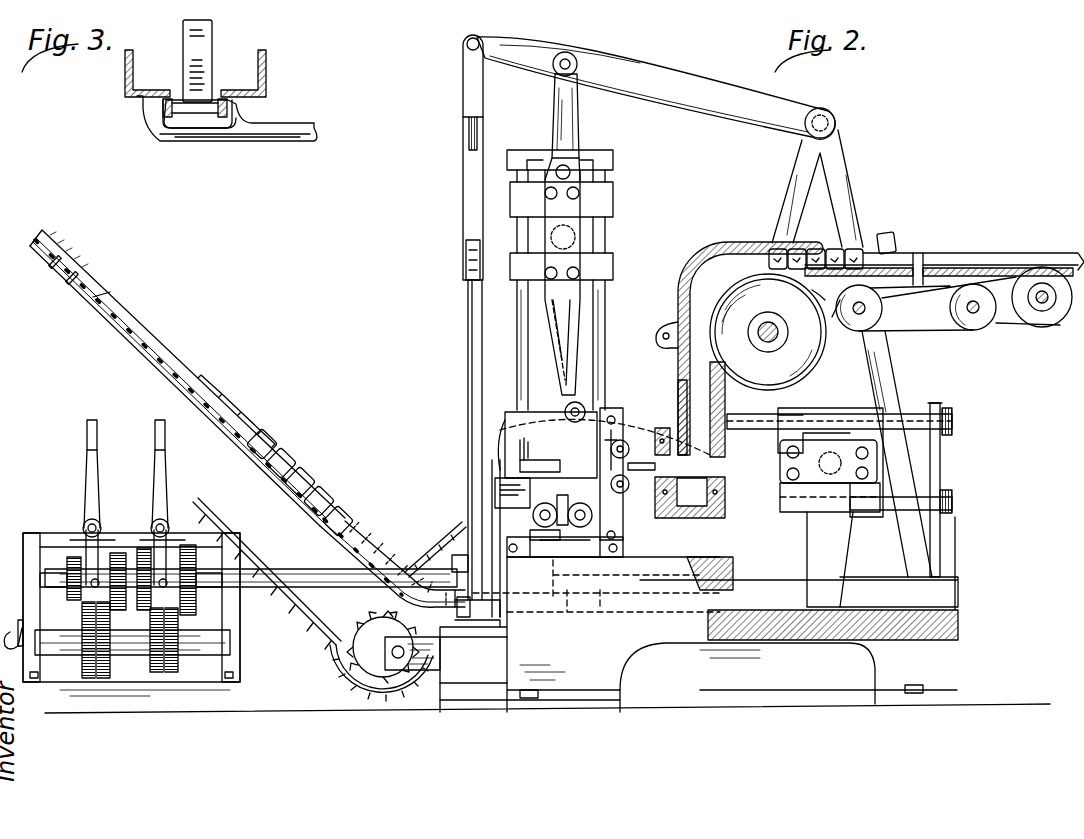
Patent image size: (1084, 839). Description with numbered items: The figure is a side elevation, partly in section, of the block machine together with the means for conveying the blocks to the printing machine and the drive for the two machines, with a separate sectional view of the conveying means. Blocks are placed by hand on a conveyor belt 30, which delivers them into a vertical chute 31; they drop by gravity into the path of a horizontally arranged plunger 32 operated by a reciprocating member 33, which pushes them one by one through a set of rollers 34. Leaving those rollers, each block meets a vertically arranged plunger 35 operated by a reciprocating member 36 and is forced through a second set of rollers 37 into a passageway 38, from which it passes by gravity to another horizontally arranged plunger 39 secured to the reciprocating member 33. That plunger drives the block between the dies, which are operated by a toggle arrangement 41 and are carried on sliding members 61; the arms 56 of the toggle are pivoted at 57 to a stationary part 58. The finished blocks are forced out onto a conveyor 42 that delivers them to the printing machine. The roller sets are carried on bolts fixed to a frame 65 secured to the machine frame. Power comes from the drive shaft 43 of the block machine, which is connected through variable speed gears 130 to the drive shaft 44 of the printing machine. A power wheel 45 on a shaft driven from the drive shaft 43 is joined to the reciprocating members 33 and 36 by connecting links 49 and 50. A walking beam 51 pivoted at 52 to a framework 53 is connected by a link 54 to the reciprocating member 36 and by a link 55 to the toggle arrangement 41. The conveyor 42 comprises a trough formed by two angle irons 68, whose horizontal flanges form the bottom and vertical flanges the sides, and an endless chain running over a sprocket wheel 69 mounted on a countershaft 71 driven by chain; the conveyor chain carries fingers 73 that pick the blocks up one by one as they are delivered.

In FIG. 2, the conveyor belt 30 is at (940, 257).
In FIG. 2, the vertical chute 31 is at (678, 328).
In FIG. 2, the horizontally arranged plunger 32 is at (740, 500).
In FIG. 2, the reciprocating member 33 is at (800, 433).
In FIG. 2, the set of rollers 34 is at (627, 493).
In FIG. 2, the vertically arranged plunger 35 is at (553, 360).
In FIG. 2, the reciprocating member 36 is at (510, 277).
In FIG. 2, the second set of rollers 37 is at (535, 510).
In FIG. 2, the passageway 38 is at (597, 577).
In FIG. 2, the horizontally arranged plunger 39 is at (707, 607).
In FIG. 2, the toggle arrangement 41 is at (459, 341).
In FIG. 3, the conveyor 42 is at (158, 125).
In FIG. 2, the conveyor 42 is at (349, 520).
In FIG. 2, the drive shaft 43 is at (295, 577).
In FIG. 2, the drive shaft 44 is at (25, 623).
In FIG. 2, the power wheel 45 is at (495, 448).
In FIG. 2, the connecting link 49 is at (617, 407).
In FIG. 2, the connecting link 50 is at (580, 320).
In FIG. 2, the walking beam 51 is at (713, 88).
In FIG. 2, the pivot 52 is at (830, 115).
In FIG. 2, the framework 53 is at (796, 243).
In FIG. 2, the link 54 is at (580, 120).
In FIG. 2, the link 55 is at (462, 83).
In FIG. 2, the arms of the toggle 56 is at (468, 358).
In FIG. 2, the pivot 57 is at (455, 557).
In FIG. 2, the stationary part 58 is at (497, 485).
In FIG. 2, the sliding members 61 is at (493, 613).
In FIG. 2, the frame 65 is at (597, 438).
In FIG. 3, the angle irons 68 is at (266, 70).
In FIG. 2, the angle irons 68 is at (153, 358).
In FIG. 2, the sprocket wheel 69 is at (362, 693).
In FIG. 2, the countershaft 71 is at (400, 660).
In FIG. 3, the fingers 73 is at (185, 53).
In FIG. 2, the fingers 73 is at (290, 463).
In FIG. 2, the variable speed gears 130 is at (74, 545).